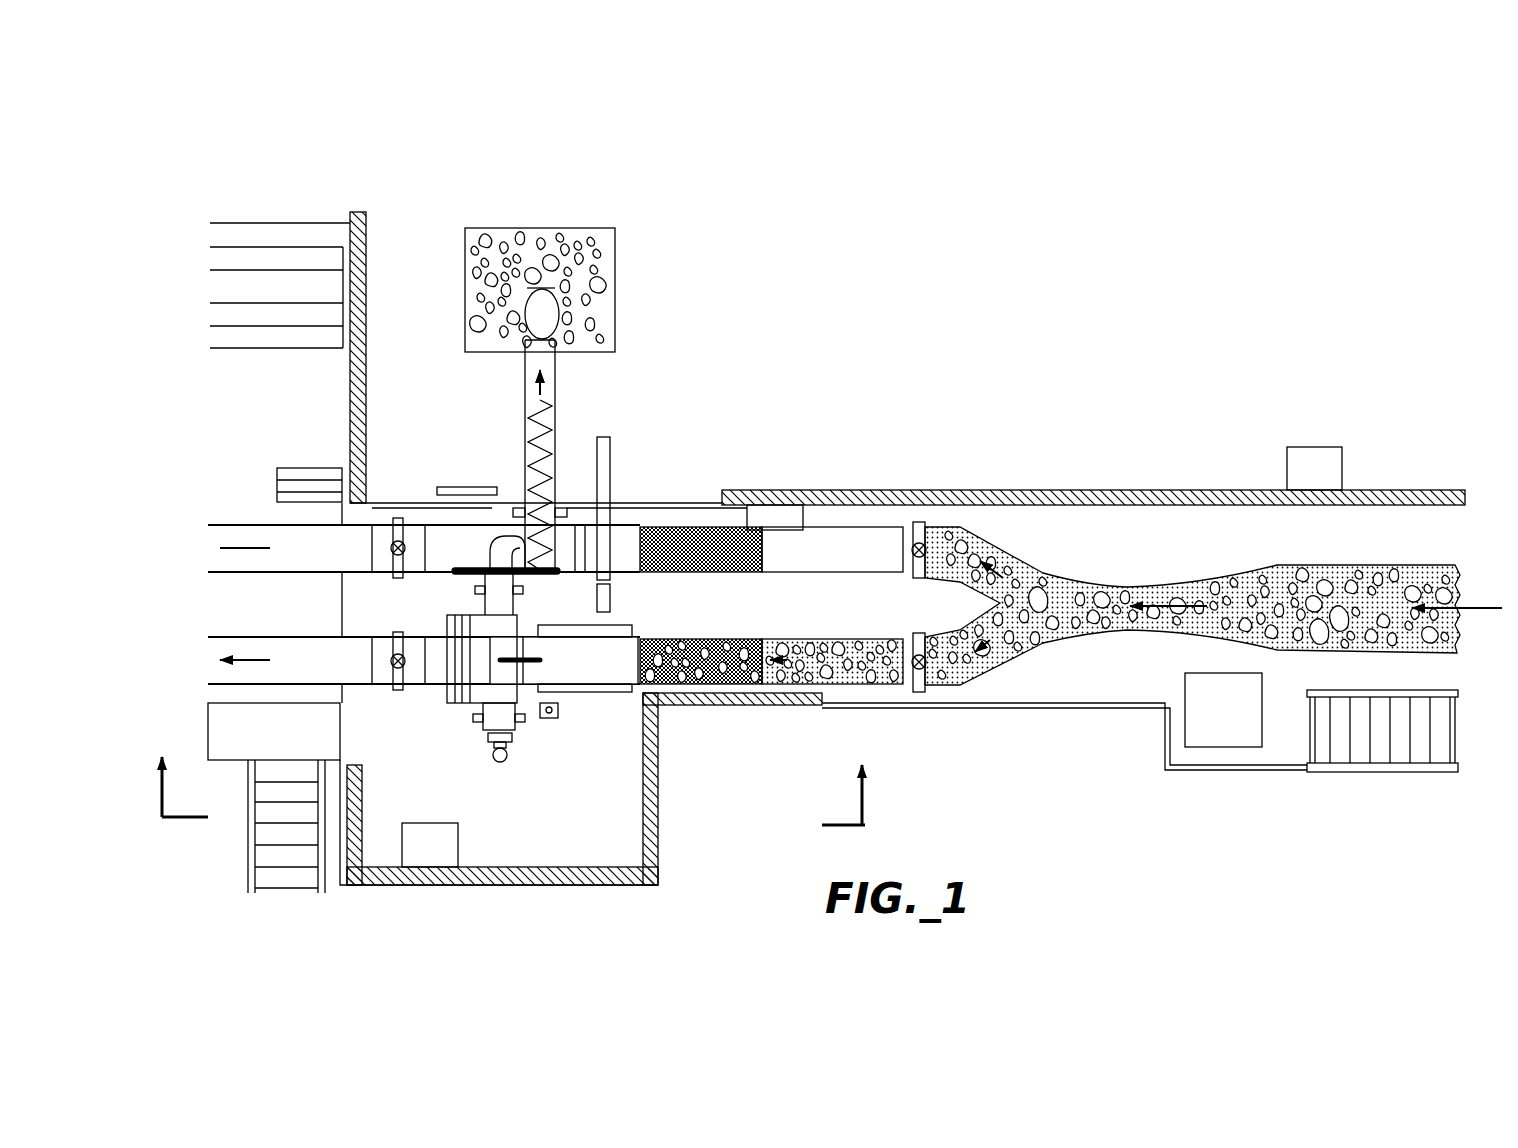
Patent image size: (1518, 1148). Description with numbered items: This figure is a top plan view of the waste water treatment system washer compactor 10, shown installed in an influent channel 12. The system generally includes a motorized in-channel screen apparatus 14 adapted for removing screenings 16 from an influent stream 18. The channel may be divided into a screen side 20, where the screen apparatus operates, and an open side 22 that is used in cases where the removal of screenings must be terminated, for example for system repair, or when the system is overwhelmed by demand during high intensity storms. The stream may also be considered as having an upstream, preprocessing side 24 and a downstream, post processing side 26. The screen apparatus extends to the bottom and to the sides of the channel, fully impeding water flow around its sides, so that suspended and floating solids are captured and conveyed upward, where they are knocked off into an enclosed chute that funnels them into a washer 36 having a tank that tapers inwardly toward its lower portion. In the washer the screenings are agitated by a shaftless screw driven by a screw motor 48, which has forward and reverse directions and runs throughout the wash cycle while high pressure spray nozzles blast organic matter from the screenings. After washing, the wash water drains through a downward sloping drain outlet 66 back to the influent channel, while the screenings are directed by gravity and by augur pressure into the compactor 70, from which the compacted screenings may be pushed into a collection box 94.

The waste water treatment system washer compactor 10 is at (1030, 336).
The influent channel 12 is at (1425, 665).
The motorized in-channel screen apparatus 14 is at (570, 673).
The screenings 16 is at (598, 252).
The influent stream 18 is at (1317, 575).
The screen side 20 is at (982, 662).
The open side 22 is at (820, 527).
The upstream side 24 is at (1170, 558).
The downstream side 26 is at (218, 505).
The washer 36 is at (478, 693).
The screw motor 48 is at (508, 745).
The drain outlet 66 is at (508, 548).
The compactor 70 is at (547, 417).
The collection box 94 is at (487, 228).